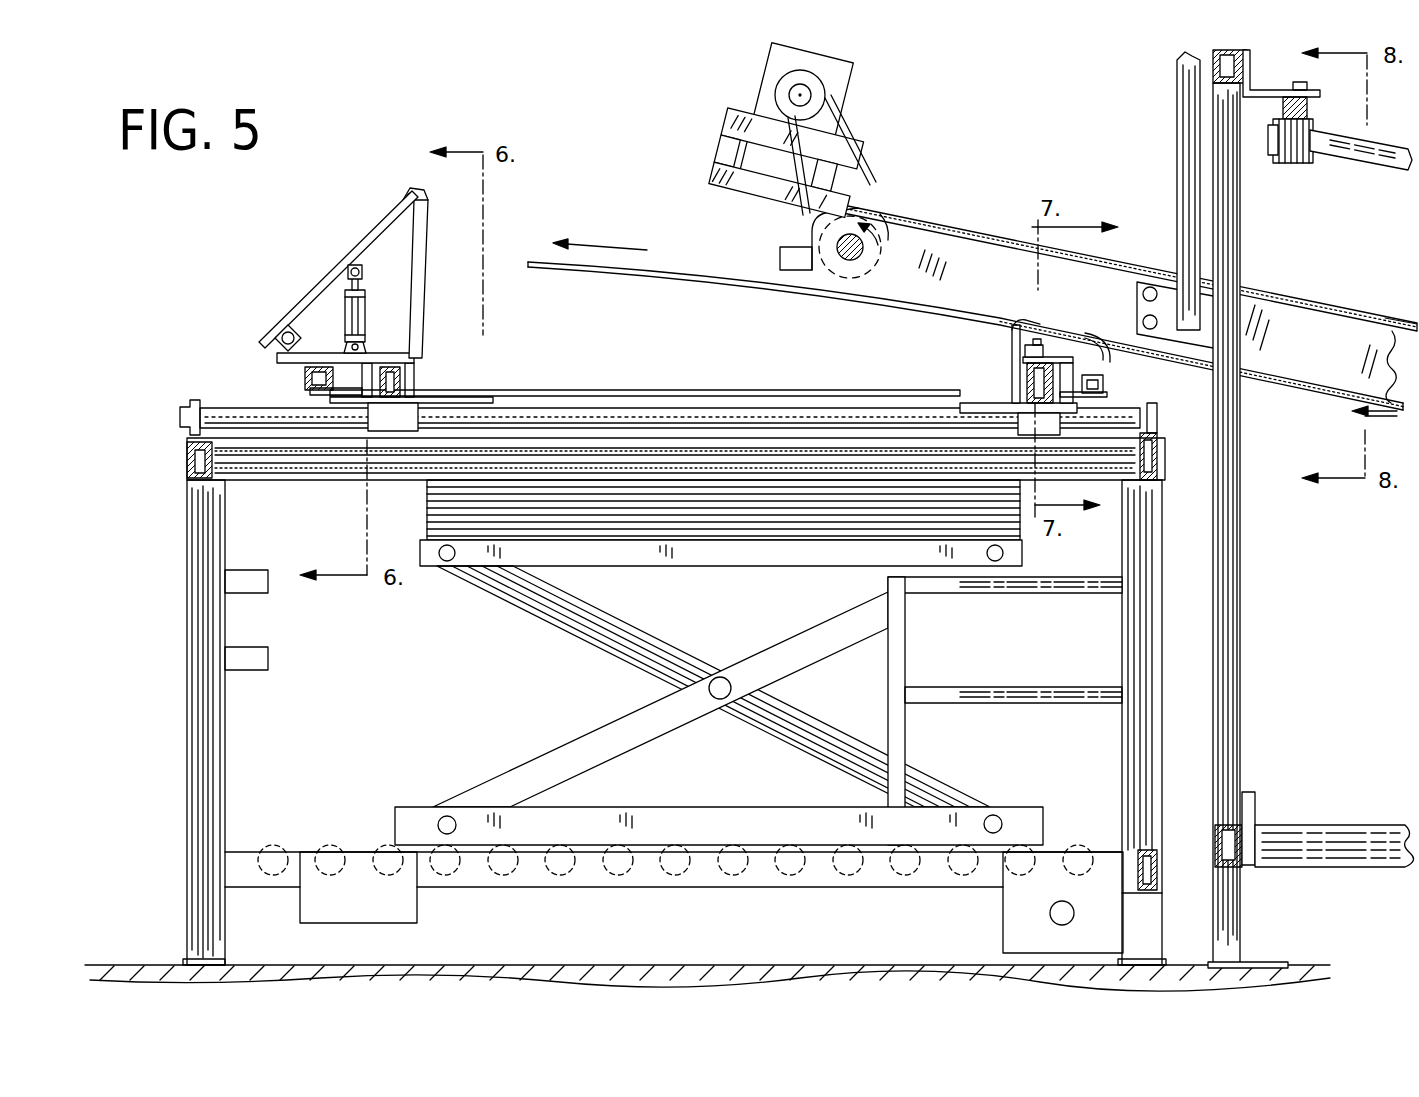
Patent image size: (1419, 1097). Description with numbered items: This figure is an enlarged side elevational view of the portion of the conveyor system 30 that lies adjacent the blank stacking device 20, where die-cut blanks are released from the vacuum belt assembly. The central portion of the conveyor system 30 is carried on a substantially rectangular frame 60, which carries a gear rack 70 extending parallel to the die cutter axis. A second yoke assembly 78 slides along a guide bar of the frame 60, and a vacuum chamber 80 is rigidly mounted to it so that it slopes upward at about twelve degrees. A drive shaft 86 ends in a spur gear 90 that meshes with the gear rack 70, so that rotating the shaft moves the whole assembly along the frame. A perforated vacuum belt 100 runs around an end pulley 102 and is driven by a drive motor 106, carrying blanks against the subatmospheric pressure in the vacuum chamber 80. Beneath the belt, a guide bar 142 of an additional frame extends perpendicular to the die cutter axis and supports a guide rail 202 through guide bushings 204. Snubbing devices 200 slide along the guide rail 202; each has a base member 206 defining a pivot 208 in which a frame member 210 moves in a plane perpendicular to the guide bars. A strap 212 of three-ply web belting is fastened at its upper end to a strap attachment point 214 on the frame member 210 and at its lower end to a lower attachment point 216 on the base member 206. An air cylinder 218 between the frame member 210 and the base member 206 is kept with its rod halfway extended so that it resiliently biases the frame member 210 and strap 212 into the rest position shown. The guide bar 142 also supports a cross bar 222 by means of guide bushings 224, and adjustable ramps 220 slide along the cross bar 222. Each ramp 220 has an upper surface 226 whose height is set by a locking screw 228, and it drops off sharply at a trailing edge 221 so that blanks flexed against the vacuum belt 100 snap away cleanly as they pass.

The blank stacking device 20 is at (205, 325).
The conveyor system 30 is at (1205, 142).
The frame 60 is at (1258, 655).
The gear rack 70 is at (1282, 100).
The second yoke assembly 78 is at (1165, 182).
The vacuum chamber 80 is at (1376, 336).
The drive shaft 86 is at (1370, 165).
The spur gear 90 is at (1283, 163).
The vacuum belt 100 is at (1291, 293).
The end pulley 102 is at (908, 232).
The drive motor 106 is at (838, 101).
The guide bar 142 is at (610, 418).
The snubbing device 200 is at (359, 272).
The guide rail 202 is at (410, 390).
The guide bushing 204 is at (410, 380).
The base member 206 is at (327, 352).
The pivot 208 is at (278, 352).
The frame member 210 is at (370, 232).
The strap 212 is at (427, 258).
The strap attachment point 214 is at (427, 208).
The lower attachment point 216 is at (410, 362).
The air cylinder 218 is at (346, 305).
The adjustable ramp 220 is at (981, 396).
The trailing edge 221 is at (1012, 332).
The cross bar 222 is at (1027, 388).
The guide bushing 224 is at (1022, 428).
The upper surface 226 is at (1083, 332).
The locking screw 228 is at (1104, 355).